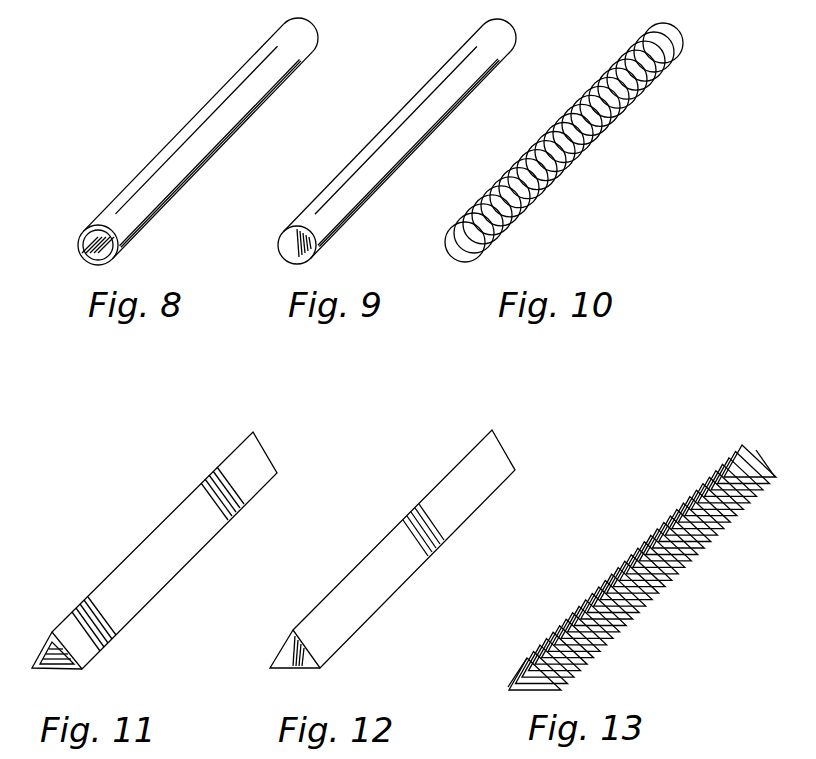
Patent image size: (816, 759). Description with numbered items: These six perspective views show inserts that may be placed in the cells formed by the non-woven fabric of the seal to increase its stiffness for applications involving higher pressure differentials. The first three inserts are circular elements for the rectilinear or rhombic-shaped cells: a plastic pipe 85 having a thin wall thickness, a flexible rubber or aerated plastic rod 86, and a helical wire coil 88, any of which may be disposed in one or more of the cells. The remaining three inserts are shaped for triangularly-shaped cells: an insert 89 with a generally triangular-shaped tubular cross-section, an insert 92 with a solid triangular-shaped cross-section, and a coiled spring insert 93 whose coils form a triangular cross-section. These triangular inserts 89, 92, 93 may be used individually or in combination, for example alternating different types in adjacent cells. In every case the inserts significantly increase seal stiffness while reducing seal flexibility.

In FIG. 8, the plastic pipe 85 is at (192, 133).
In FIG. 9, the flexible rubber or aerated plastic rod 86 is at (385, 143).
In FIG. 10, the helical wire coil 88 is at (627, 118).
In FIG. 11, the insert 89 is at (142, 588).
In FIG. 12, the insert 92 is at (382, 587).
In FIG. 13, the coiled spring insert 93 is at (630, 600).